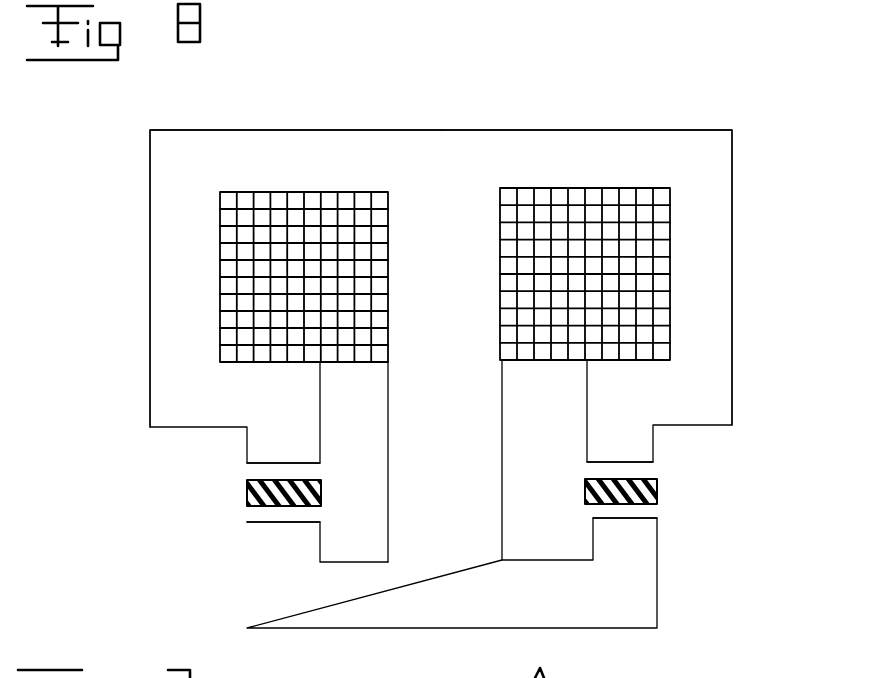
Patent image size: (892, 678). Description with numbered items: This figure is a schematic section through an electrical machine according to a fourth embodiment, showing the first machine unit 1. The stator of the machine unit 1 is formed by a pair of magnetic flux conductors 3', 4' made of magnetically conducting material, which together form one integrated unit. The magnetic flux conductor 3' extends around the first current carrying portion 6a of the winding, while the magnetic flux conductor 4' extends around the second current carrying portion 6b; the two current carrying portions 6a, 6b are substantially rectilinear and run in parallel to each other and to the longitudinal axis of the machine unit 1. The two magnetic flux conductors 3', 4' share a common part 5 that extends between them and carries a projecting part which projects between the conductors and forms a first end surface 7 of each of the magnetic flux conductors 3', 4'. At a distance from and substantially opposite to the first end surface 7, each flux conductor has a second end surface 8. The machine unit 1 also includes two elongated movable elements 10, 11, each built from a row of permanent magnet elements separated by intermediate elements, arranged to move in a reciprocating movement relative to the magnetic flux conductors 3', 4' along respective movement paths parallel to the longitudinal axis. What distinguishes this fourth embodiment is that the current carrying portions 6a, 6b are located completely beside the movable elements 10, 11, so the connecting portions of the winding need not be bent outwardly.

The magnetic actuator assembly 1 is at (533, 51).
The left core half 3' is at (295, 314).
The right core half 4' is at (586, 311).
The yoke / armature 5 is at (443, 597).
The left coil 6a is at (268, 275).
The right coil 6b is at (627, 268).
The pole face of core 7 is at (312, 465).
The pole face of yoke 8 is at (308, 520).
The left spacer / damping element 10 is at (247, 495).
The right spacer / damping element 11 is at (657, 487).